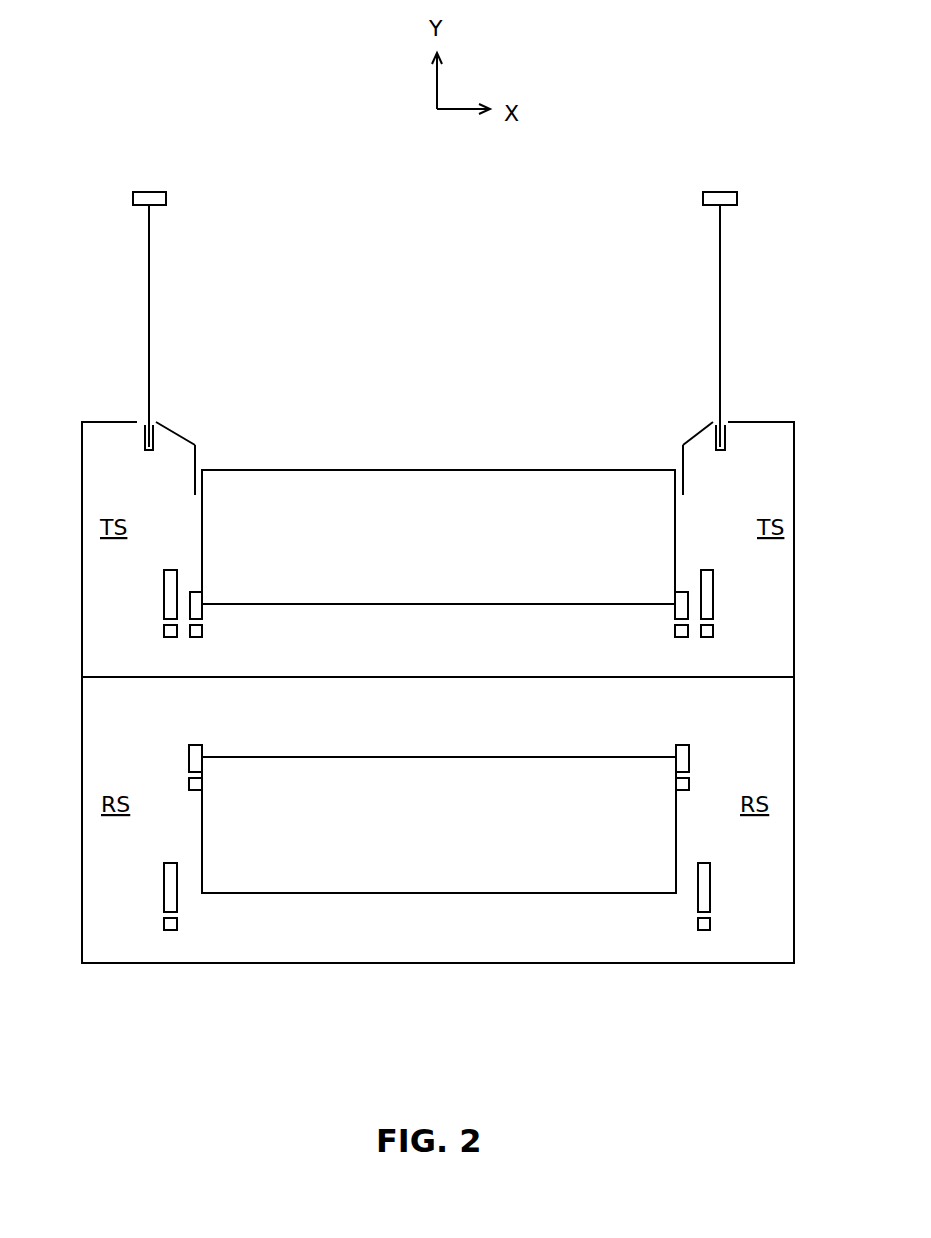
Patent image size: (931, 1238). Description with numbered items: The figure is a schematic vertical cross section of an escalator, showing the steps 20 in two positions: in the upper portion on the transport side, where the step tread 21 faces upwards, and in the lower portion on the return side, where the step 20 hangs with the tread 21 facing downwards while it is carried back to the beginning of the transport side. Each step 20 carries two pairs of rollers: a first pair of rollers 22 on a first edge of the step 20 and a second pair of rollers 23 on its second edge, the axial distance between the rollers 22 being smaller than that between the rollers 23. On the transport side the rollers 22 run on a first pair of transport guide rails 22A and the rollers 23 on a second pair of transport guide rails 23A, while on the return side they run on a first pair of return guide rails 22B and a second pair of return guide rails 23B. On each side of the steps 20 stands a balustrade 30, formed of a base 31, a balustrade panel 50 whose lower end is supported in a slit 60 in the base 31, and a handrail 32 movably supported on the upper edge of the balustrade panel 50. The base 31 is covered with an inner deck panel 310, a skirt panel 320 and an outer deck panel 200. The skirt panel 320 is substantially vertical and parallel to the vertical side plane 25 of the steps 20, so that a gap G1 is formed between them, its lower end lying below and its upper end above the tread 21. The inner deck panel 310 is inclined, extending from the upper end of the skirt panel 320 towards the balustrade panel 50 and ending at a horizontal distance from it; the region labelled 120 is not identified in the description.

The step 20 is at (439, 710).
The step tread 21 is at (349, 470).
The first pair of rollers 22 is at (198, 602).
The first pair of transport guide rails 22A is at (197, 632).
The first pair of return guide rails 22B is at (192, 782).
The second pair of rollers 23 is at (172, 590).
The second pair of transport guide rails 23A is at (170, 633).
The second pair of return guide rails 23B is at (170, 923).
The vertical side plane 25 is at (202, 545).
The balustrade 30 is at (438, 330).
The base 31 is at (441, 430).
The inner deck panel 310 is at (175, 430).
The skirt panel 320 is at (193, 483).
The handrail 32 is at (149, 190).
The balustrade panel 50 is at (149, 272).
The slit 60 is at (152, 452).
The guide region 120 is at (183, 443).
The outer deck panel 200 is at (115, 420).
The gap G1 is at (204, 450).